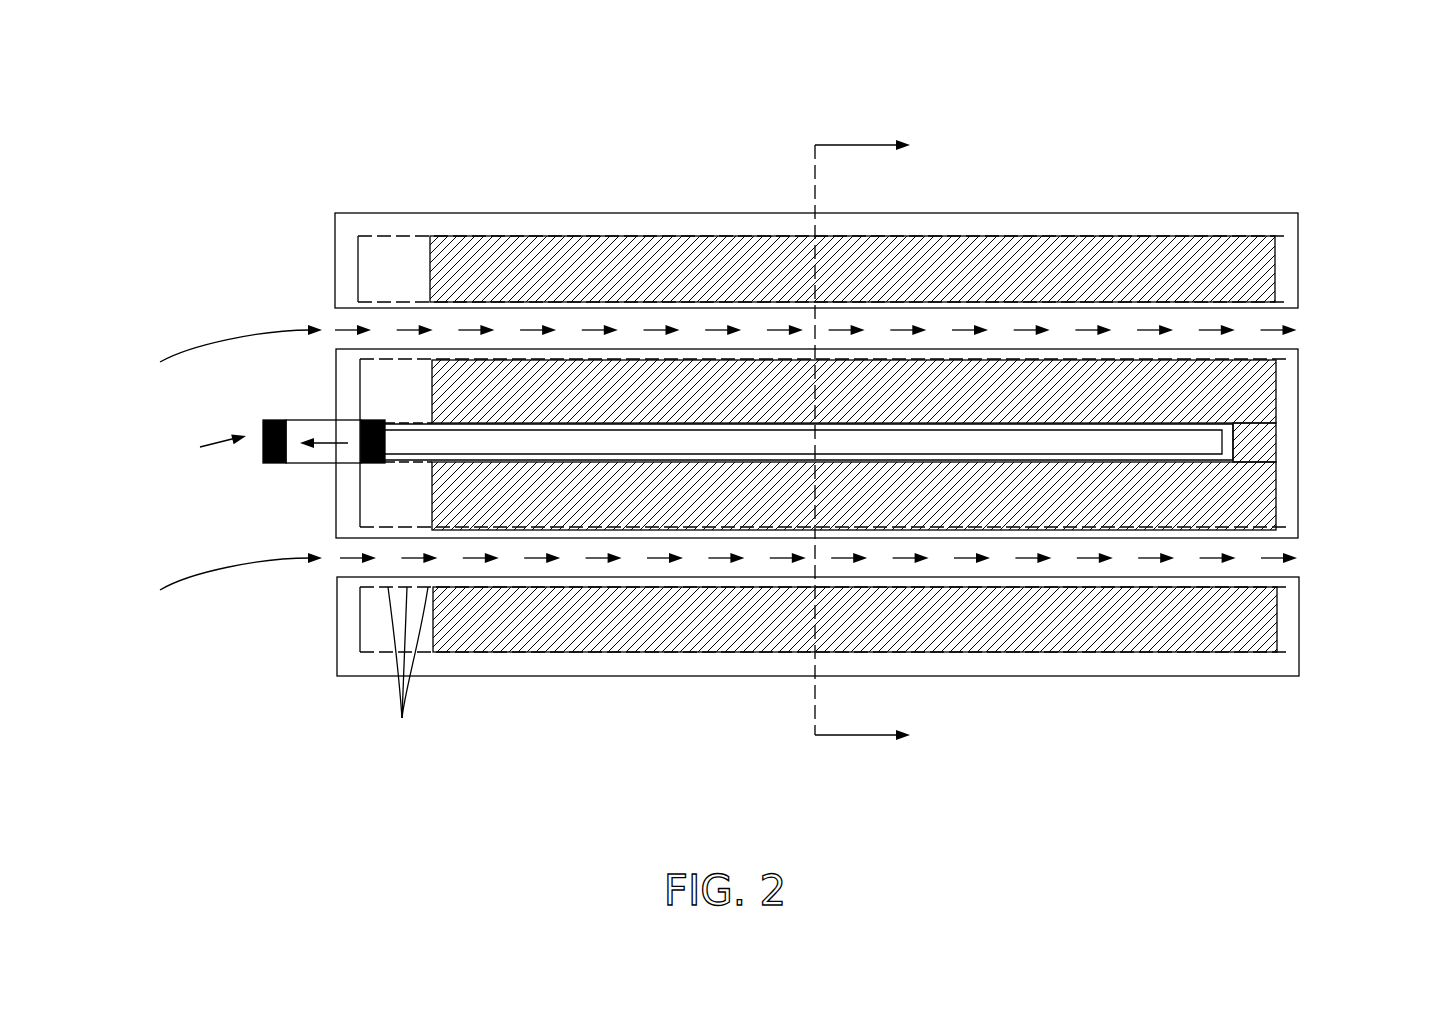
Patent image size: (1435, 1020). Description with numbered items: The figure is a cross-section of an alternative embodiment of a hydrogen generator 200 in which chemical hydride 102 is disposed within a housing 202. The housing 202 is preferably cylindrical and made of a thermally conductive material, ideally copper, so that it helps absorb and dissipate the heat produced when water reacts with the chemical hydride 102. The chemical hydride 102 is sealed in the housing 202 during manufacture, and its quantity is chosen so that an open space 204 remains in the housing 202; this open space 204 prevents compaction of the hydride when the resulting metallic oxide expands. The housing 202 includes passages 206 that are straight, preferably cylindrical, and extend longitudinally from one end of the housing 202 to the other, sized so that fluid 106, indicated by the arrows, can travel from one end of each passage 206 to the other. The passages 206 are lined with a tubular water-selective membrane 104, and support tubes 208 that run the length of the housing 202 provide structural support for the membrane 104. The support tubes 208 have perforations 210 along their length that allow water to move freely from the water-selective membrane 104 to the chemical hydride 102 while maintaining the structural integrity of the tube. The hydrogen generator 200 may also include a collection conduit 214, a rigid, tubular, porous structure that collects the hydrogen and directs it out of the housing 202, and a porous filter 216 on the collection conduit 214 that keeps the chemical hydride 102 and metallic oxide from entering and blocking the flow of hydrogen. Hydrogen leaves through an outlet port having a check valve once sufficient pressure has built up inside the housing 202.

The hydrogen generator 200 is at (185, 78).
The housing 202 is at (460, 222).
The water-selective membrane 104 is at (602, 305).
The support tubes 208 is at (420, 300).
The open space 204 is at (382, 276).
The chemical hydride 102 is at (1170, 260).
The fluid 106 is at (345, 328).
The passages 206 is at (215, 467).
The perforations 210 is at (404, 667).
The filter 216 is at (1198, 560).
The collection conduit 214 is at (337, 428).